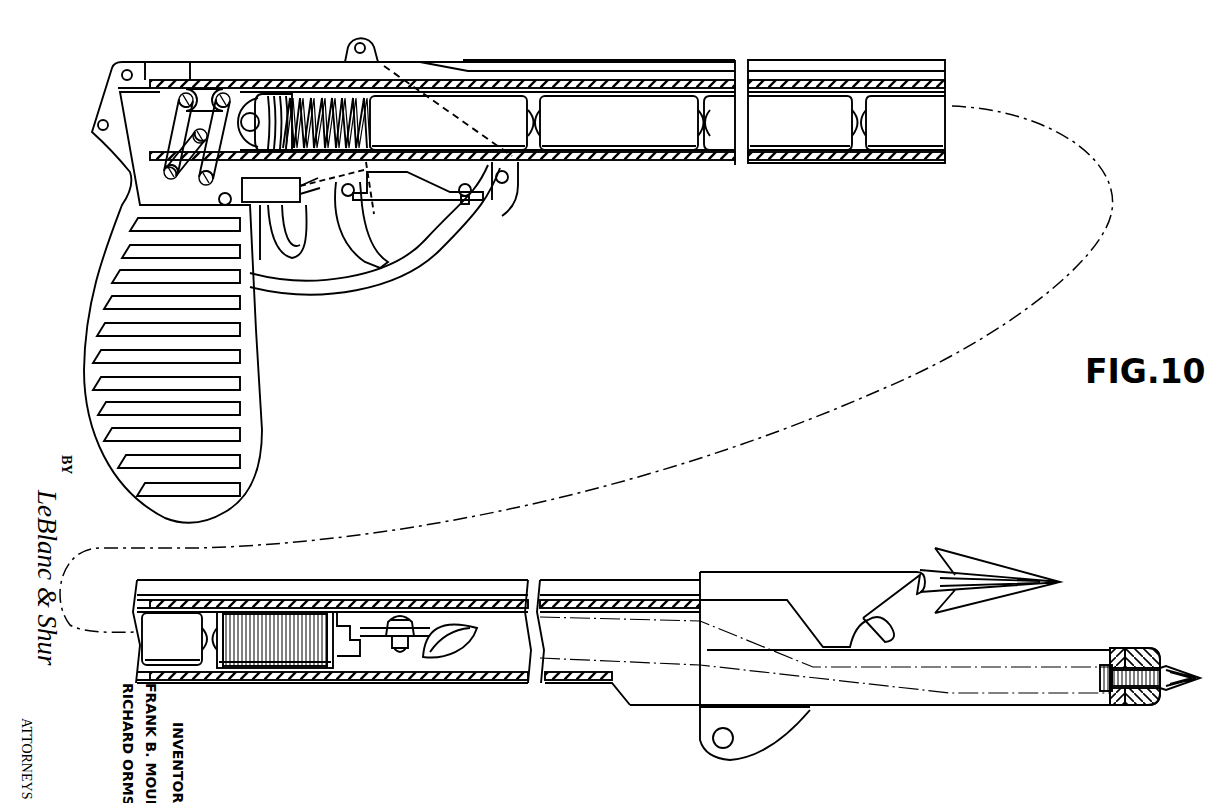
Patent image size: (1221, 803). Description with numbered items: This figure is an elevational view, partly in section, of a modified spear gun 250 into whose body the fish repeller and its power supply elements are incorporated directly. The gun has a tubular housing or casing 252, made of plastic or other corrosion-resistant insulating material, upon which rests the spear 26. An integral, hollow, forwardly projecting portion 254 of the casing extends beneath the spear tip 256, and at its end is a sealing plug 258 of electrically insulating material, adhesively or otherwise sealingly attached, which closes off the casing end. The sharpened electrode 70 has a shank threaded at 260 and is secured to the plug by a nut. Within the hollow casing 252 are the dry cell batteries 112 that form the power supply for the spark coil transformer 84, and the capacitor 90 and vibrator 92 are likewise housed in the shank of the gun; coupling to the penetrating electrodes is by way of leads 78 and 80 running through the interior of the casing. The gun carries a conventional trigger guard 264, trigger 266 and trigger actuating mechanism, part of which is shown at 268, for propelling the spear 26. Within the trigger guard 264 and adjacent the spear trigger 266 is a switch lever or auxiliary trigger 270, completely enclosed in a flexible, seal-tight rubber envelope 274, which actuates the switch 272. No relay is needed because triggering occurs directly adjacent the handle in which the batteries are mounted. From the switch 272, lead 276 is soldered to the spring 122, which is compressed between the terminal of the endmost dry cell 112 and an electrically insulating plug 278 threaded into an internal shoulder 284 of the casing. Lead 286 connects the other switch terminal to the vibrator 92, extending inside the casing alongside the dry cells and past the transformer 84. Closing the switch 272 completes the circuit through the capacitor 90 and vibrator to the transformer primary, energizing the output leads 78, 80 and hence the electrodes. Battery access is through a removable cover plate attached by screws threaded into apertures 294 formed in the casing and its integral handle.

The spear 26 is at (655, 580).
The electrode 70 is at (1170, 672).
The lead 78 is at (578, 612).
The lead 80 is at (582, 680).
The spark coil transformer 84 is at (253, 580).
The capacitor 90 is at (440, 655).
The vibrator 92 is at (386, 590).
The dry cell batteries 112 is at (716, 96).
The spring 122 is at (376, 190).
The spear gun 250 is at (333, 639).
The tubular housing or casing 252 is at (492, 682).
The forwardly projecting portion 254 is at (926, 708).
The spear tip 256 is at (1004, 578).
The sealing plug 258 is at (1122, 650).
The threaded shank portion 260 is at (1133, 705).
The trigger guard 264 is at (470, 228).
The trigger 266 is at (380, 250).
The trigger actuating mechanism 268 is at (186, 140).
The switch lever or auxiliary trigger 270 is at (300, 234).
The switch 272 is at (240, 193).
The rubber envelope 274 is at (288, 256).
The lead 276 is at (314, 195).
The electrically insulating plug 278 is at (272, 95).
The internal shoulder 284 is at (286, 96).
The lead 286 is at (606, 163).
The apertures 294 is at (100, 121).